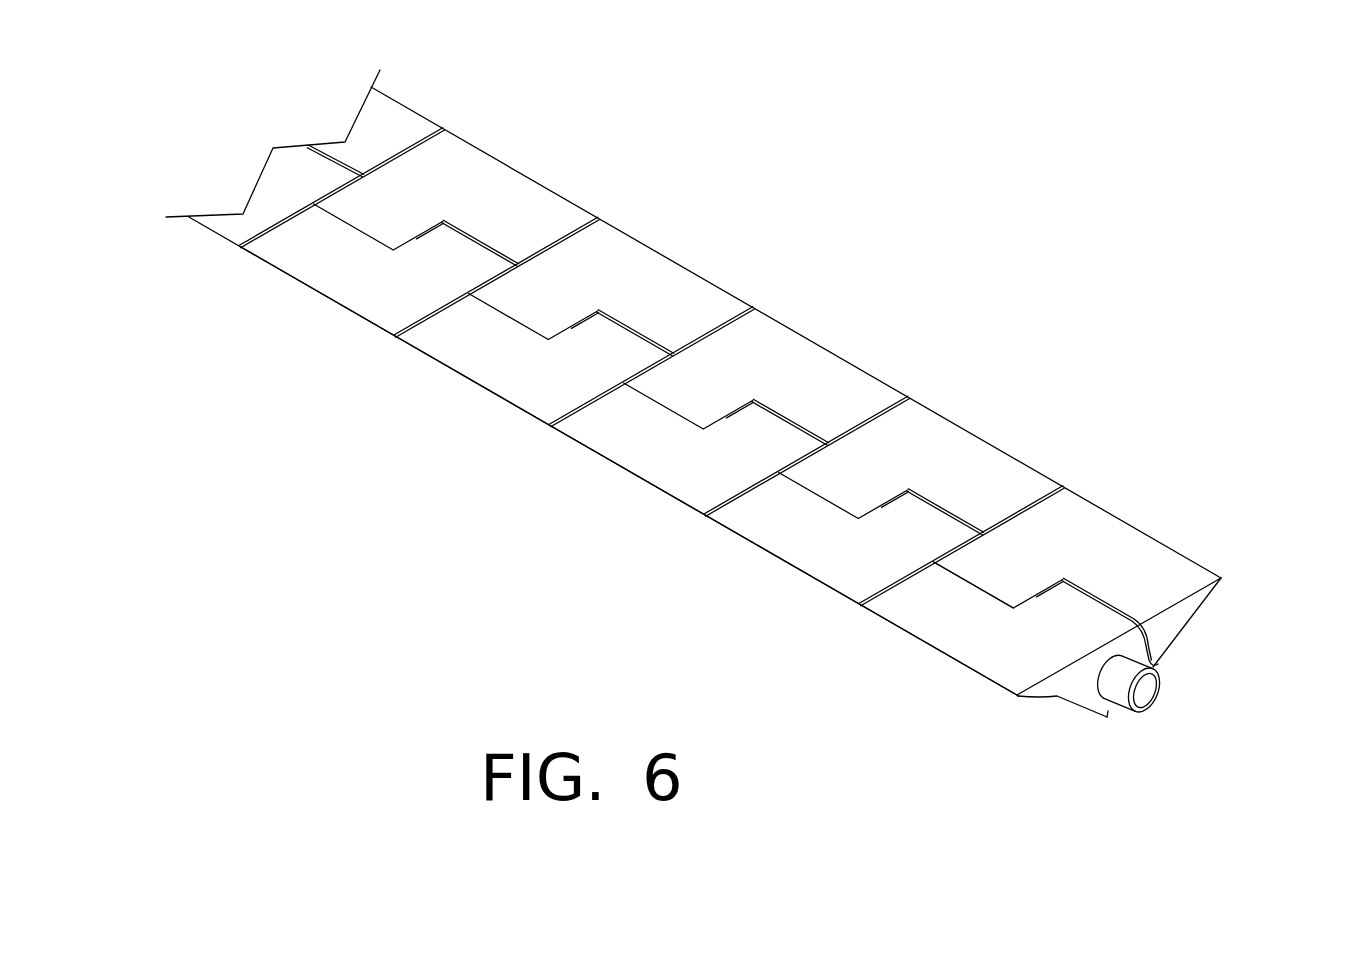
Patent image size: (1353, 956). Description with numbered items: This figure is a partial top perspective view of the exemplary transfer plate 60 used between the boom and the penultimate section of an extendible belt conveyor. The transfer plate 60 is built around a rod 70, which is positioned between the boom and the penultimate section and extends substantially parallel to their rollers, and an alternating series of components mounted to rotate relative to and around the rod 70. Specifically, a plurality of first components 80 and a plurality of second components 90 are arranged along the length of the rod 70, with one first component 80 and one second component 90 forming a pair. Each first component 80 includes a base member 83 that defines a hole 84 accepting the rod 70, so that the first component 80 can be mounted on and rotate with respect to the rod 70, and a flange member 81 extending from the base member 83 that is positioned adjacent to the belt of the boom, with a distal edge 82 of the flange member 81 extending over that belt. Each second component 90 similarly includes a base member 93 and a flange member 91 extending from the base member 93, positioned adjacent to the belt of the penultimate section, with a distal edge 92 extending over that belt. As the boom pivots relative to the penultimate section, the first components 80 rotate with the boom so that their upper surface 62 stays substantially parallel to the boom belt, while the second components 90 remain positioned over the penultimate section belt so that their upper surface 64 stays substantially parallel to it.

The transfer plate 60 is at (1087, 200).
The upper surface 62 is at (1009, 657).
The upper surface 64 is at (1050, 558).
The rod 70 is at (1150, 690).
The first component 80 is at (316, 291).
The flange member 81 is at (1052, 697).
The distal edge 82 is at (1002, 697).
The base member 83 is at (1106, 718).
The hole 84 is at (1100, 660).
The second component 90 is at (523, 175).
The flange member 91 is at (1195, 613).
The distal edge 92 is at (1222, 578).
The base member 93 is at (1003, 570).